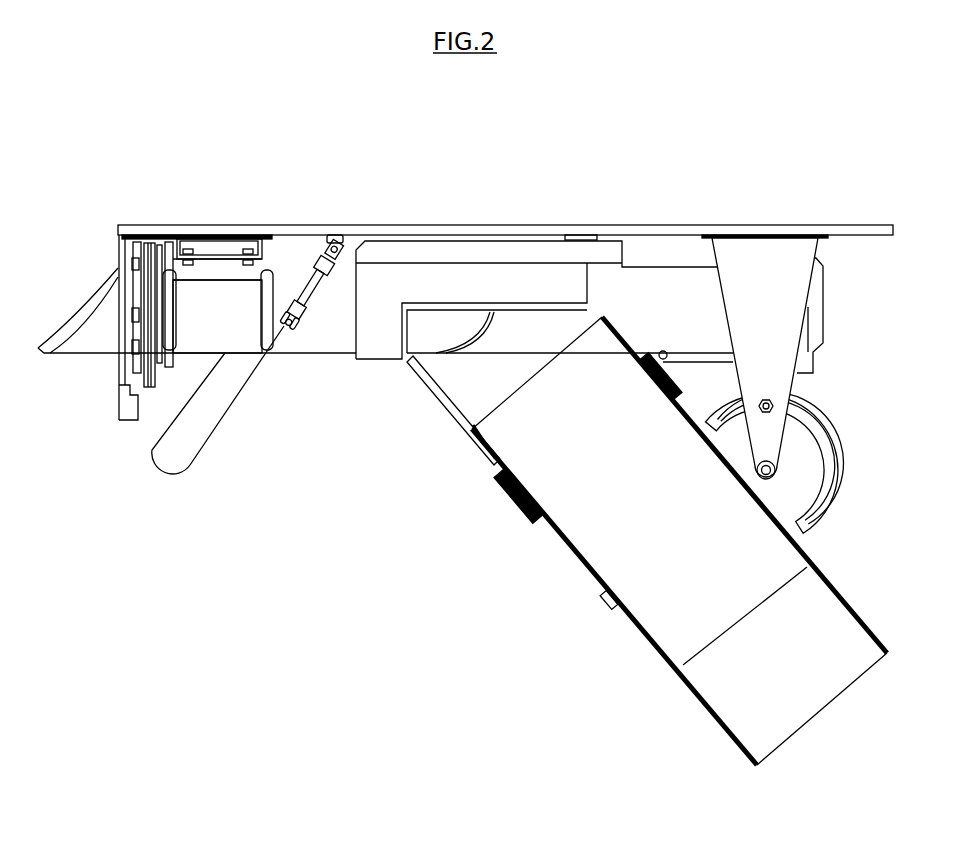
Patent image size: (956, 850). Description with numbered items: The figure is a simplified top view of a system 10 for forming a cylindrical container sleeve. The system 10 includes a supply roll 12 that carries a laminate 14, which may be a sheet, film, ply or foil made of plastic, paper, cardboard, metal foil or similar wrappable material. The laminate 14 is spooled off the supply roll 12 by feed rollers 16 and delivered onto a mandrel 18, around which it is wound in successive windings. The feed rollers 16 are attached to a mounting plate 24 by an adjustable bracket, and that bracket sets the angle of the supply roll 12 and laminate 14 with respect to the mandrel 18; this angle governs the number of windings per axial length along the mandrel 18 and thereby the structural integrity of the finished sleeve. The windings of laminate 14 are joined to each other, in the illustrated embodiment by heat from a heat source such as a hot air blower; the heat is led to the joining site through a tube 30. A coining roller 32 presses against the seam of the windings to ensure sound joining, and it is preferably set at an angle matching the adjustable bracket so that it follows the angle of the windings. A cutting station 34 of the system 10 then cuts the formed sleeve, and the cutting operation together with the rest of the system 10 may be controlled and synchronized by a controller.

The system 10 is at (480, 205).
The supply roll 12 is at (653, 542).
The laminate 14 is at (476, 384).
The feed rollers 16 is at (532, 515).
The mandrel 18 is at (652, 313).
The mounting plate 24 is at (850, 233).
The tube 30 is at (233, 395).
The coining roller 32 is at (313, 262).
The cutting station 34 is at (163, 387).